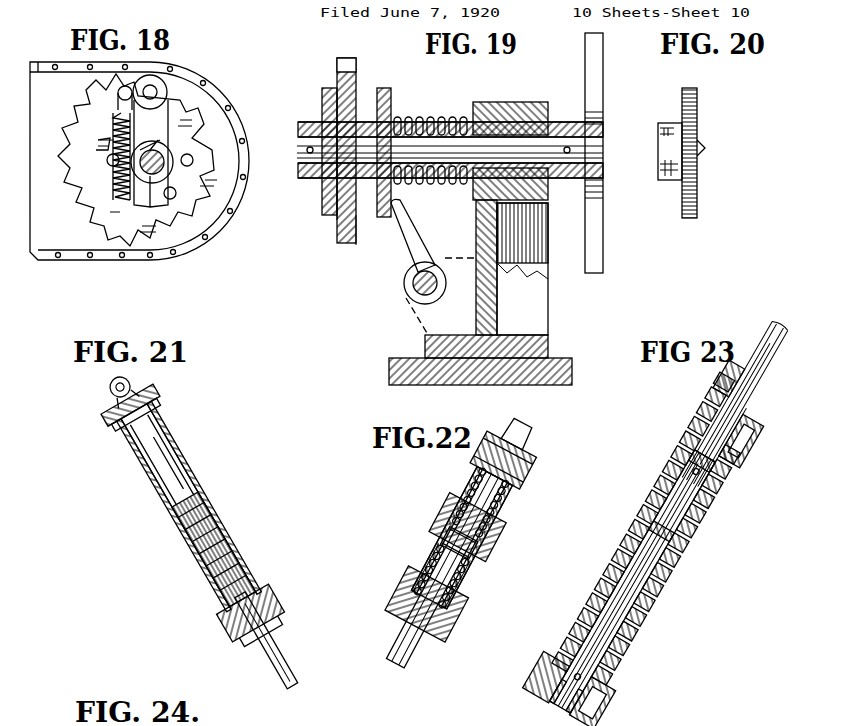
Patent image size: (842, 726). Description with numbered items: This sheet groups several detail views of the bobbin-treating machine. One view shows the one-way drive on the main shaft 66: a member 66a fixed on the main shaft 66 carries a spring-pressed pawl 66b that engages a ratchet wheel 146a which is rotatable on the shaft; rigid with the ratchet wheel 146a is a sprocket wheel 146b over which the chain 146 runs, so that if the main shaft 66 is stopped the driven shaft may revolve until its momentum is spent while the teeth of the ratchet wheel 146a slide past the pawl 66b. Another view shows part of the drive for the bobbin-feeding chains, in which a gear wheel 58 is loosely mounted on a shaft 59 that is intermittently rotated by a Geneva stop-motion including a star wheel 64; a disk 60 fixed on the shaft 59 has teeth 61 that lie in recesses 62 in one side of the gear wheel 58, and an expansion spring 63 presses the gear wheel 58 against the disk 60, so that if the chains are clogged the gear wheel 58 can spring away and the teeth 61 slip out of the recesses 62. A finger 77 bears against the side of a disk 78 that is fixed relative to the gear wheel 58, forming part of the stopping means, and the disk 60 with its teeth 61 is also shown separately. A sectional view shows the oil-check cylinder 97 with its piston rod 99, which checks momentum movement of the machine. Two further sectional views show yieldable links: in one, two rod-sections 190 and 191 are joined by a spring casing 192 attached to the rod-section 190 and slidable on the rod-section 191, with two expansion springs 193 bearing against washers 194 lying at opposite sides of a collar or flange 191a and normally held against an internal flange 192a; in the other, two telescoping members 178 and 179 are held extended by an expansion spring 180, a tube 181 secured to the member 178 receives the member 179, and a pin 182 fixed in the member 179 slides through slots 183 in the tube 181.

In FIG. 18, the chain 146 is at (58, 72).
In FIG. 18, the ratchet wheel 146a is at (135, 157).
In FIG. 18, the sprocket wheel 146b is at (62, 176).
In FIG. 18, the main shaft 66 is at (173, 153).
In FIG. 18, the member fixed on the shaft 66a is at (160, 112).
In FIG. 18, the spring-pressed pawl 66b is at (125, 100).
In FIG. 19, the gear wheel 58 is at (346, 58).
In FIG. 19, the shaft 59 is at (360, 140).
In FIG. 19, the disk 60 is at (324, 96).
In FIG. 20, the disk 60 is at (689, 122).
In FIG. 19, the teeth 61 is at (340, 218).
In FIG. 20, the teeth 61 is at (705, 148).
In FIG. 19, the recesses 62 is at (342, 92).
In FIG. 19, the expansion spring 63 is at (422, 115).
In FIG. 19, the star wheel 64 is at (605, 86).
In FIG. 19, the finger 77 is at (410, 236).
In FIG. 19, the disk 78 is at (385, 96).
In FIG. 21, the oil-check cylinder 97 is at (200, 478).
In FIG. 21, the piston rod 99 is at (284, 655).
In FIG. 22, the rod-section 190 is at (538, 442).
In FIG. 22, the rod-section 191 is at (420, 662).
In FIG. 22, the collar or flange 191a is at (492, 566).
In FIG. 22, the spring casing 192 is at (432, 524).
In FIG. 22, the internal flange 192a is at (488, 556).
In FIG. 22, the expansion springs 193 is at (512, 520).
In FIG. 22, the washers 194 is at (445, 508).
In FIG. 23, the telescoping member 178 is at (774, 334).
In FIG. 23, the telescoping member 179 is at (622, 568).
In FIG. 23, the expansion spring 180 is at (660, 522).
In FIG. 23, the tube 181 is at (682, 452).
In FIG. 23, the pin 182 is at (692, 560).
In FIG. 23, the slots 183 is at (662, 498).